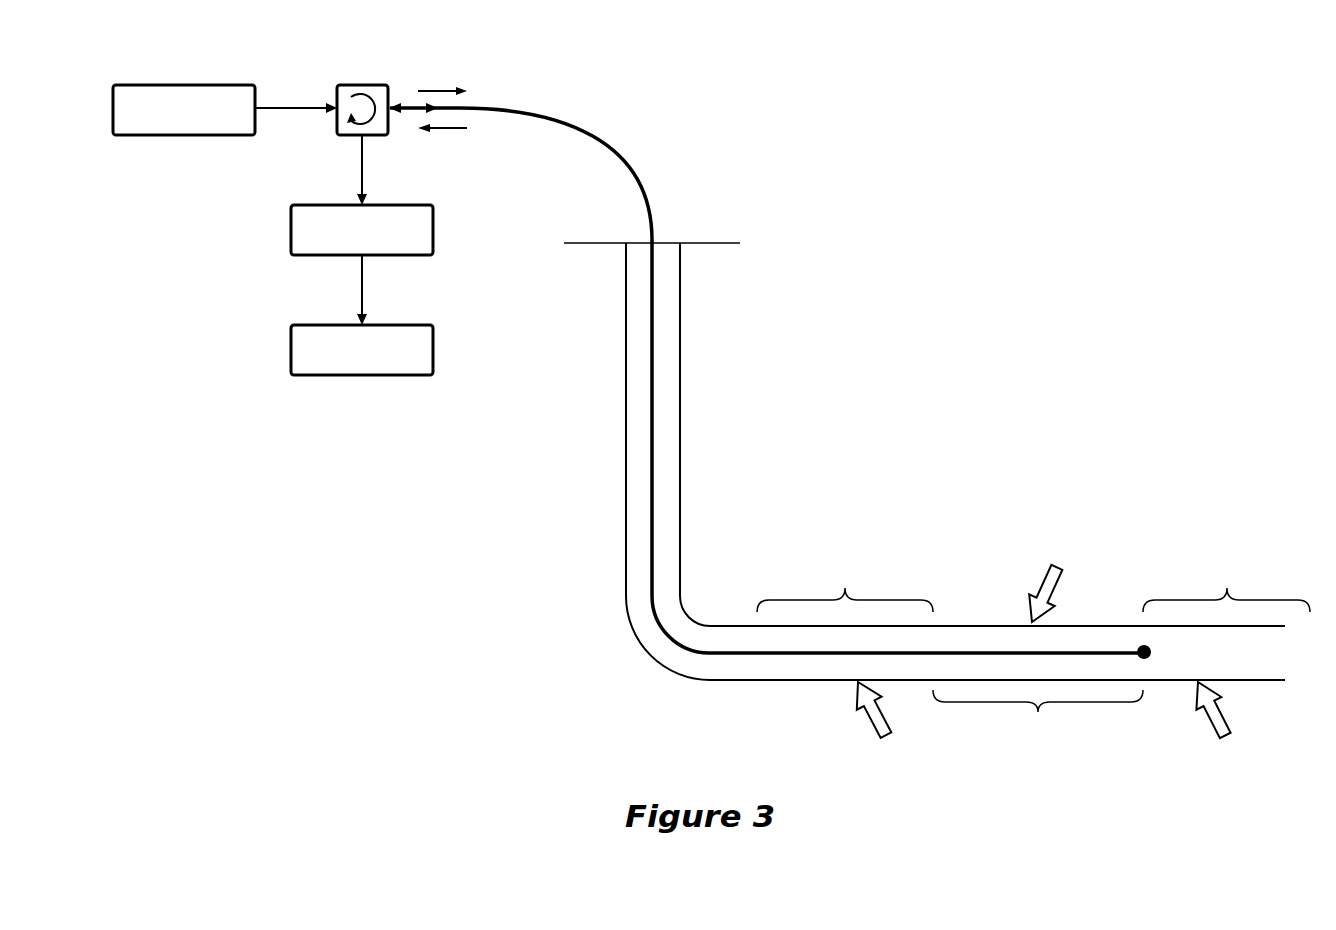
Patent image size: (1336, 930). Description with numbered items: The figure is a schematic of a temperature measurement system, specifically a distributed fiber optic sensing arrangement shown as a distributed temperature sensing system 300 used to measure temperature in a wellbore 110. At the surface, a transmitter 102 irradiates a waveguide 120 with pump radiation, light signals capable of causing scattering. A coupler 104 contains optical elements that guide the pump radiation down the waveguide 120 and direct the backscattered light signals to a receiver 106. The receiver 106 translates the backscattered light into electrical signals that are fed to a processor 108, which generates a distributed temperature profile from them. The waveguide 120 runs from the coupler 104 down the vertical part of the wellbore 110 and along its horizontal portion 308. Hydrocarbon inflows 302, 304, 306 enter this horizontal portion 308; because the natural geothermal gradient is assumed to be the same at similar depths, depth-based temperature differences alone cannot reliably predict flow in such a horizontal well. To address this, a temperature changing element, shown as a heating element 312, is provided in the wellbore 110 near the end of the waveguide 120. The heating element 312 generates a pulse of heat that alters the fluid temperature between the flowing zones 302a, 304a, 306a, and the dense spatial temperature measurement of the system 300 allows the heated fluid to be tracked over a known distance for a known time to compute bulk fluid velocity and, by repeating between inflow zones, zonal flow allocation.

The distributed temperature sensing system 300 is at (632, 34).
The transmitter 102 is at (145, 82).
The coupler 104 is at (349, 82).
The receiver 106 is at (317, 203).
The processor 108 is at (317, 323).
The wellbore 110 is at (626, 359).
The waveguide 120 is at (616, 150).
The hydrocarbon inflow 302 is at (873, 737).
The flowing zone 302a is at (845, 588).
The hydrocarbon inflow 304 is at (1045, 573).
The flowing zone 304a is at (1038, 718).
The hydrocarbon inflow 306 is at (1216, 737).
The flowing zone 306a is at (1226, 588).
The horizontal portion 308 is at (724, 681).
The heating element 312 is at (1137, 645).